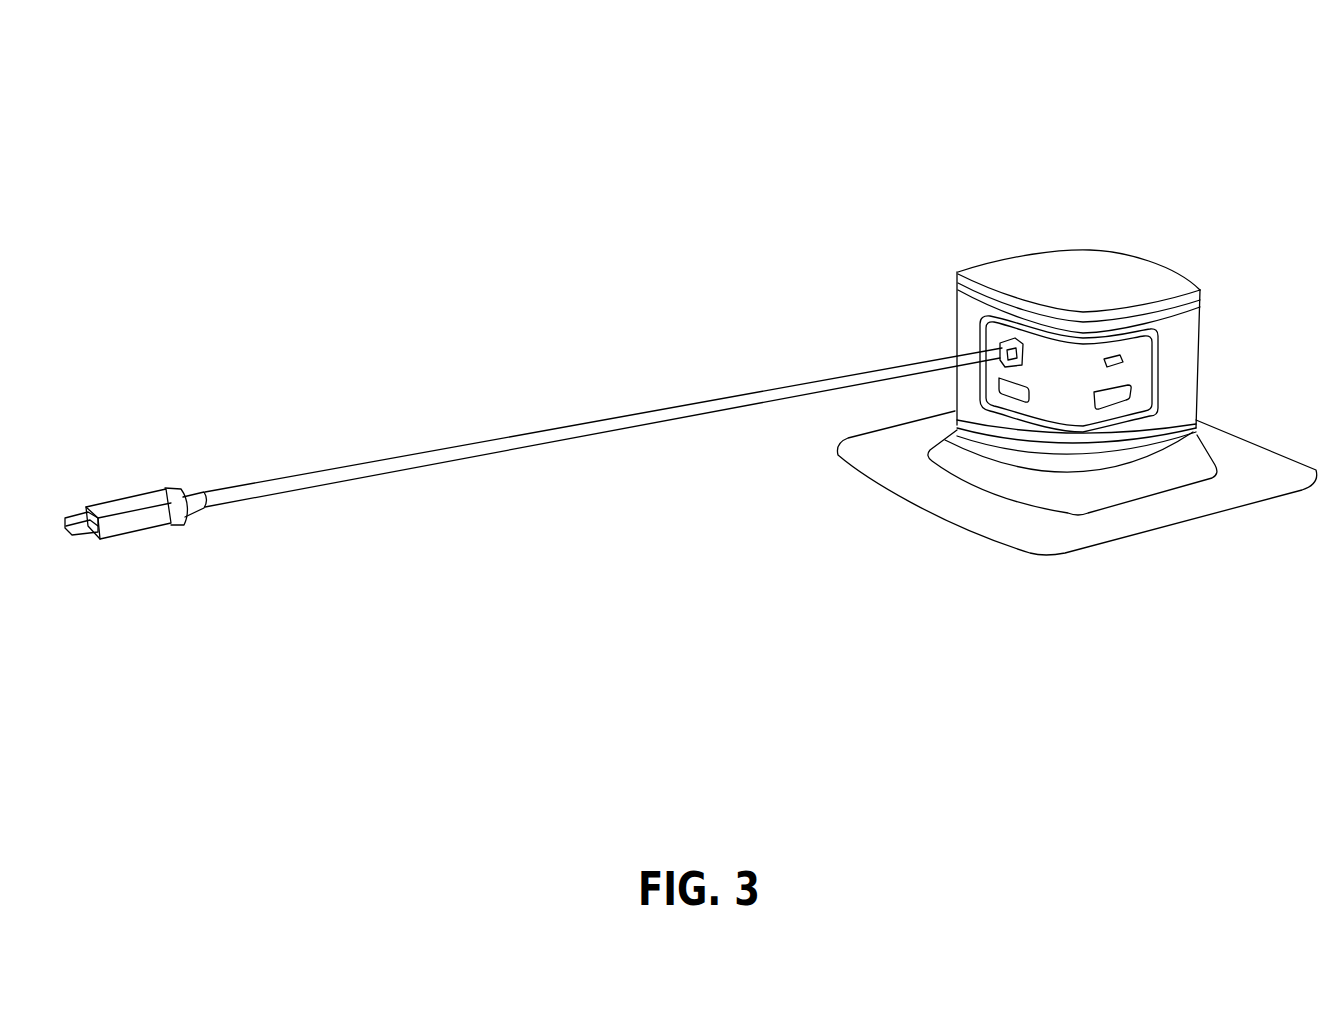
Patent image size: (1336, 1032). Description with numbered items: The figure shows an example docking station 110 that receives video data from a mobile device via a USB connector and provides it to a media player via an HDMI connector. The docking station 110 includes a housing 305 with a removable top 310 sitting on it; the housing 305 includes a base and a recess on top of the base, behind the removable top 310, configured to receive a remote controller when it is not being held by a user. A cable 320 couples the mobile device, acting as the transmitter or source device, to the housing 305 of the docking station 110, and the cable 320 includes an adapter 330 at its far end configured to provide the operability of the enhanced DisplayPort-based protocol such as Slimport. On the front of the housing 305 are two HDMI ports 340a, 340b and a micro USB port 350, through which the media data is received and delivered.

The docking station 110 is at (1300, 88).
The housing 305 is at (973, 320).
The removable top 310 is at (1076, 258).
The cable 320 is at (432, 447).
The adapter 330 is at (143, 522).
The HDMI port 340a is at (998, 388).
The HDMI port 340b is at (1127, 401).
The micro USB port 350 is at (1123, 369).